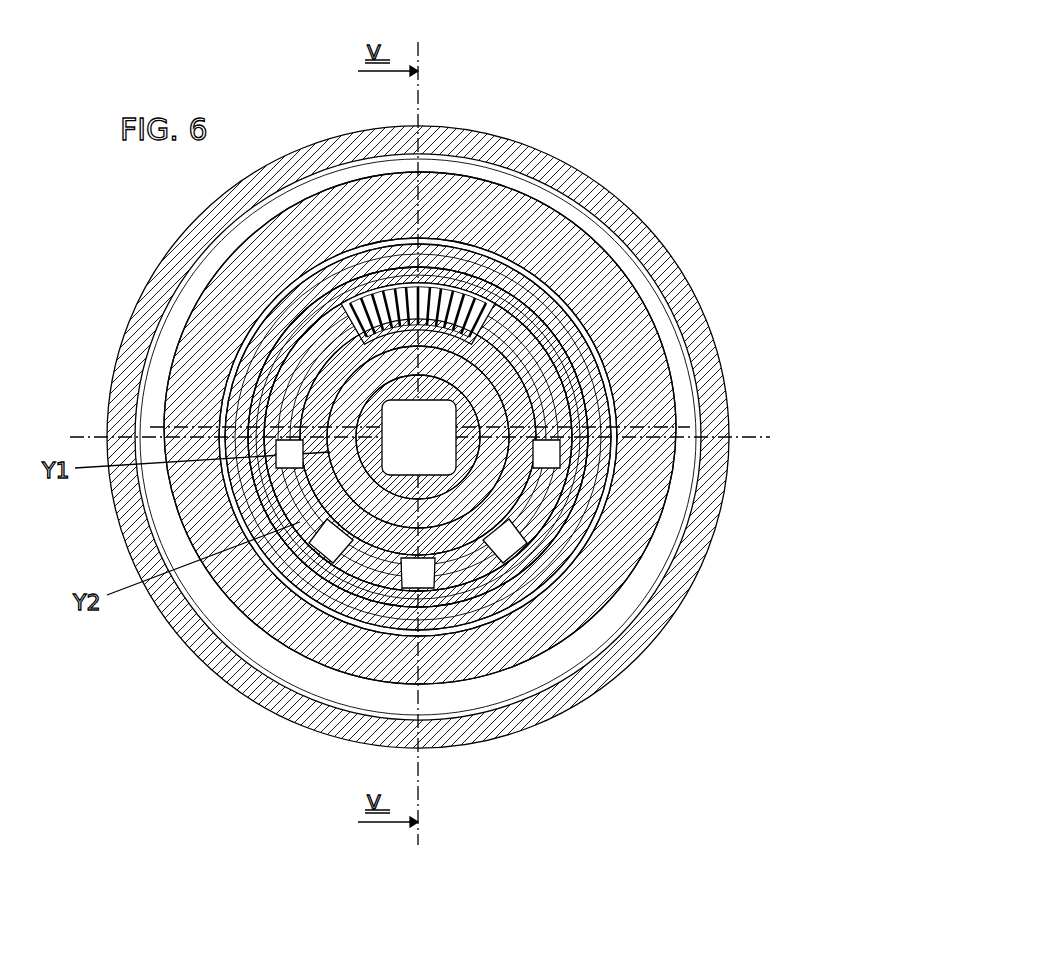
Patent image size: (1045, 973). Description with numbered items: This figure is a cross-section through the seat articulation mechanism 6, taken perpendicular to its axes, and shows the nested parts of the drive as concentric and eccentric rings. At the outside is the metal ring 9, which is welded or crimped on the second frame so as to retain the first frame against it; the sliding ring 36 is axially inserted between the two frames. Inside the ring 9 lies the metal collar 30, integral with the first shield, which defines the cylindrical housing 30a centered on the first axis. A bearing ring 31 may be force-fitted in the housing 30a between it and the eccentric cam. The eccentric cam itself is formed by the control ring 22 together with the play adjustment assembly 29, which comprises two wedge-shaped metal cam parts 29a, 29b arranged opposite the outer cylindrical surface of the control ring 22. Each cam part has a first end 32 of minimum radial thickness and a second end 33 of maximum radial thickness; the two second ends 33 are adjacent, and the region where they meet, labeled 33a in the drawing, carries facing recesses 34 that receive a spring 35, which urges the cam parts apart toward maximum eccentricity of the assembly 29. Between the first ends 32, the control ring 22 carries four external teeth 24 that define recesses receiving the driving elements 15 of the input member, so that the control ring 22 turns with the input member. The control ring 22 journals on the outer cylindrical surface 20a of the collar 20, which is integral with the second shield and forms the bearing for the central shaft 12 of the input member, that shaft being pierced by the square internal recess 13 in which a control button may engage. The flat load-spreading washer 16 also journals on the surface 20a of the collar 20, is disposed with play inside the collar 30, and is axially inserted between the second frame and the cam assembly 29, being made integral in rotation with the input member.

The articulation mechanism 6 is at (640, 68).
The metal ring 9 is at (633, 212).
The central shaft 12 is at (475, 550).
The internal recess 13 is at (470, 600).
The driving element 15 is at (462, 565).
The load-spreading washer 16 is at (530, 470).
The collar 20 is at (318, 398).
The outer cylindrical surface of collar 20a is at (340, 407).
The control ring 22 is at (545, 312).
The external teeth 24 is at (490, 530).
The play adjustment assembly 29 is at (560, 275).
The cam part 29a is at (295, 350).
The cam part 29b is at (615, 407).
The metal collar 30 is at (565, 345).
The cylindrical housing 30a is at (548, 352).
The bearing ring 31 is at (518, 378).
The first end 32 is at (545, 442).
The second end 33 is at (322, 300).
The pin set 33a is at (417, 270).
The recess 34 is at (340, 285).
The spring 35 is at (440, 262).
The sliding ring 36 is at (520, 520).